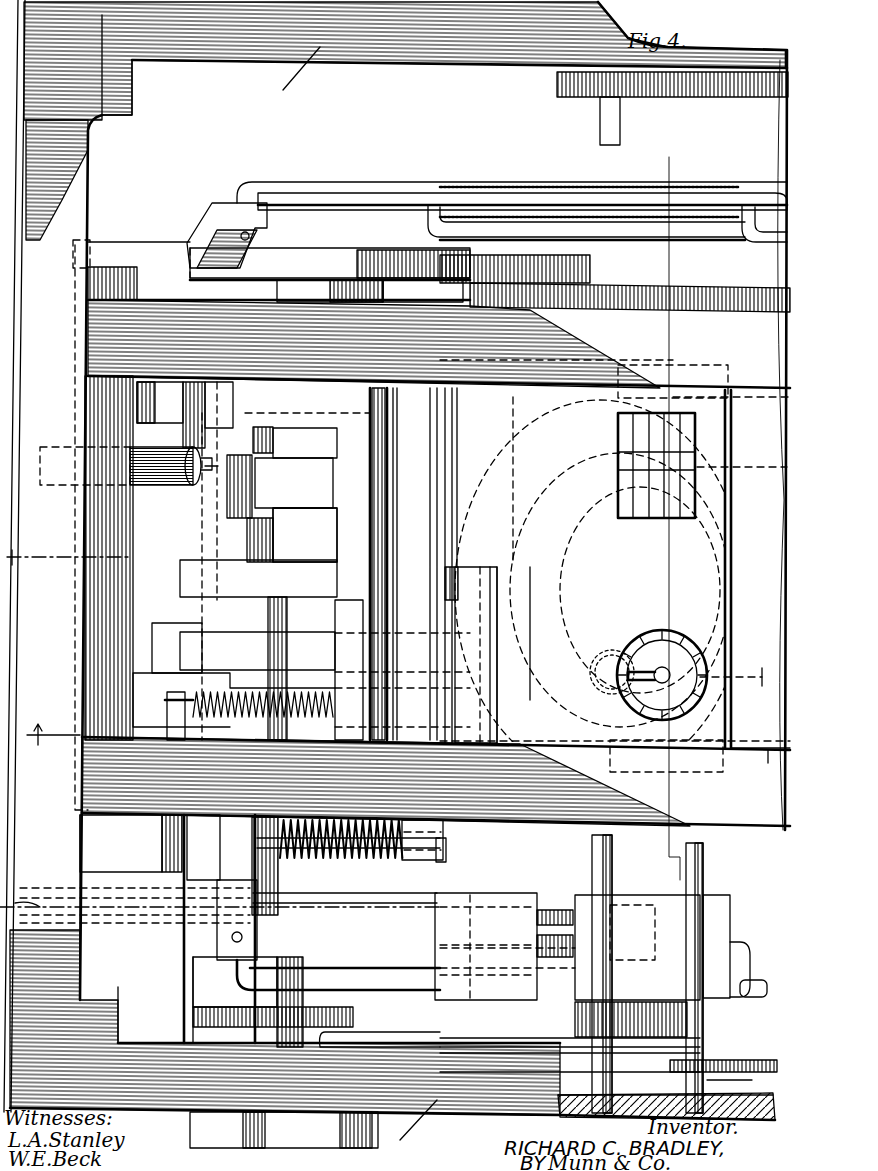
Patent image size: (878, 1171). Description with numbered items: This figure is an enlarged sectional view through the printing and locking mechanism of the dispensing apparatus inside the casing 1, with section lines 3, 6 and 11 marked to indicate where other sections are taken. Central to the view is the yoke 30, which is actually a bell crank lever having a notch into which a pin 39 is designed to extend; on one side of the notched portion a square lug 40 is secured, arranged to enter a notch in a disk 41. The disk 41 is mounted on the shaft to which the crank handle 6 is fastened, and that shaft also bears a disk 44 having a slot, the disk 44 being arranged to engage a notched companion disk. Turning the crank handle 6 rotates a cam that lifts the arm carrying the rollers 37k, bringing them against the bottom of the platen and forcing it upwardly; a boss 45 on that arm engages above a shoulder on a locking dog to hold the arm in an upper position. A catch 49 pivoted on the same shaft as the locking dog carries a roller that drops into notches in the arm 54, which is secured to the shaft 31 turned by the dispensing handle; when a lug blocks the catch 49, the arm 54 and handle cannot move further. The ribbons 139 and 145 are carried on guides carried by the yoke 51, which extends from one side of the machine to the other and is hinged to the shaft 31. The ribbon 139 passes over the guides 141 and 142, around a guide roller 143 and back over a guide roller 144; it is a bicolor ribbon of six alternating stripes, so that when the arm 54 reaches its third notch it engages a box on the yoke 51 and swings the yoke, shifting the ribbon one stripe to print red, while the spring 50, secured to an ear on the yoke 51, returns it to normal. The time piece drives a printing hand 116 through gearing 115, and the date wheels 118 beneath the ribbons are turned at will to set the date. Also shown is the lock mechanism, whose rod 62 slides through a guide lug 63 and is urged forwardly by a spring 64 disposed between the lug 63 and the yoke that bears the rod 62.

The casing 1 is at (232, 593).
The section line 3- 3 is at (740, 680).
The crank handle 6 is at (387, 821).
The center line / shaft axis 11 is at (673, 579).
The yoke 30 is at (156, 678).
The shaft 31 is at (135, 285).
The rollers 37k is at (672, 376).
The pin 39 is at (132, 736).
The square lug 40 is at (176, 632).
The disk 41 is at (233, 641).
The disk 44 is at (196, 572).
The boss 45 is at (330, 548).
The catch 49 is at (243, 440).
The spring 50 is at (129, 479).
The yoke 51 is at (121, 250).
The arm 54 is at (160, 402).
The rod 62 is at (445, 852).
The lug 63 is at (445, 829).
The spring 64 is at (386, 851).
The gearing 115 is at (698, 640).
The printing hand 116 is at (628, 700).
The date wheels 118 is at (641, 518).
The ribbon 139 is at (711, 206).
The guide 141 is at (627, 240).
The guide 142 is at (749, 942).
The guide roller 143 is at (746, 997).
The guide roller 144 is at (557, 195).
The ribbon 145 is at (476, 215).